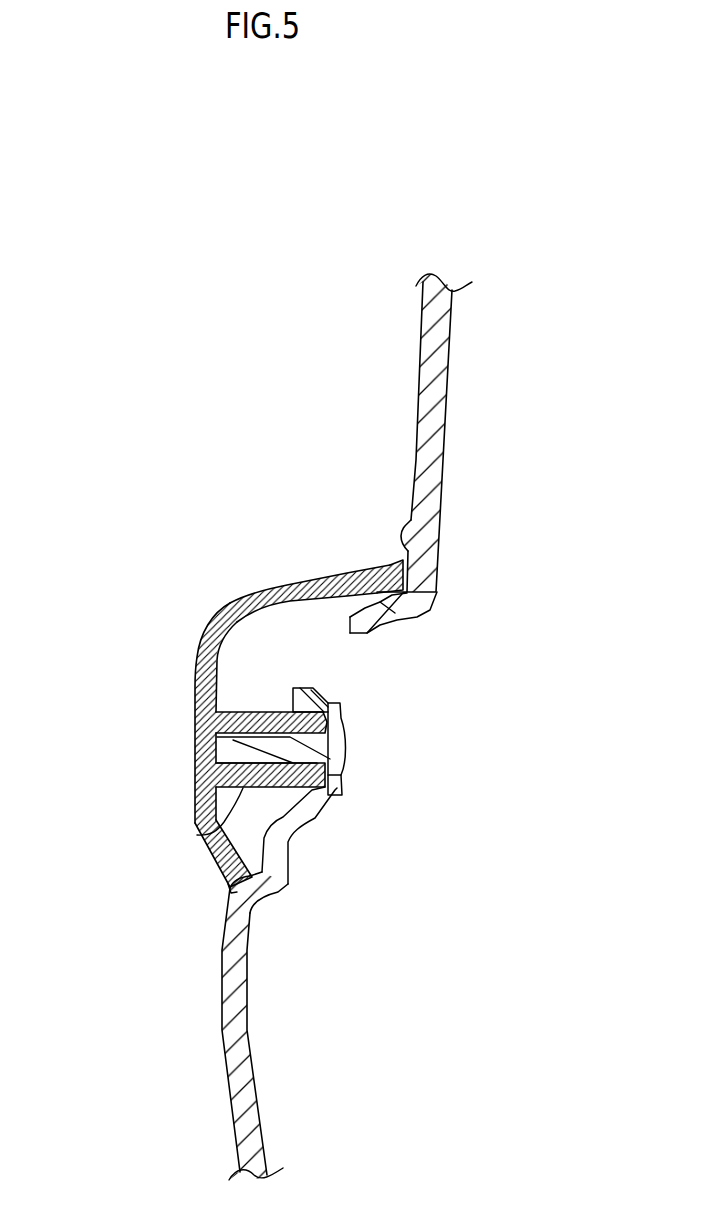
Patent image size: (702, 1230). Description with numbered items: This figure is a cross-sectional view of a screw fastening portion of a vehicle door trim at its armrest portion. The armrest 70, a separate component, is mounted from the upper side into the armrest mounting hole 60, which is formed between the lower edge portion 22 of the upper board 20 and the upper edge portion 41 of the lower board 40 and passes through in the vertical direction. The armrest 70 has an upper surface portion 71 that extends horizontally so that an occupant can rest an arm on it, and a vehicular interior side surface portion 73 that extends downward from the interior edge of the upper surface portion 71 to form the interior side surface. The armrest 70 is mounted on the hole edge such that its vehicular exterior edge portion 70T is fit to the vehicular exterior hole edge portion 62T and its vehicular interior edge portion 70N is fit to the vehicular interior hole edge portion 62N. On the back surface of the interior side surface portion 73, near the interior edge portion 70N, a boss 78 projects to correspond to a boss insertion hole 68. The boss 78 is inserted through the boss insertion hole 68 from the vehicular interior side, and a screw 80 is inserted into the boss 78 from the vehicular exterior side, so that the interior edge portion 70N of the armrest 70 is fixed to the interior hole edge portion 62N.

The upper board 20 is at (431, 433).
The lower edge portion 22 is at (412, 527).
The armrest 70 is at (235, 666).
The upper surface portion 71 is at (278, 584).
The vehicular exterior edge portion 70T is at (383, 561).
The vehicular interior side surface portion 73 is at (195, 753).
The vehicular interior edge portion 70N is at (195, 785).
The boss 78 is at (197, 835).
The screw 80 is at (336, 785).
The boss insertion hole 68 is at (342, 771).
The armrest mounting hole 60 is at (395, 752).
The vehicular exterior hole edge portion 62T is at (433, 594).
The vehicular interior hole edge portion 62N is at (255, 850).
The lower board 40 is at (213, 1026).
The upper edge portion 41 is at (228, 915).